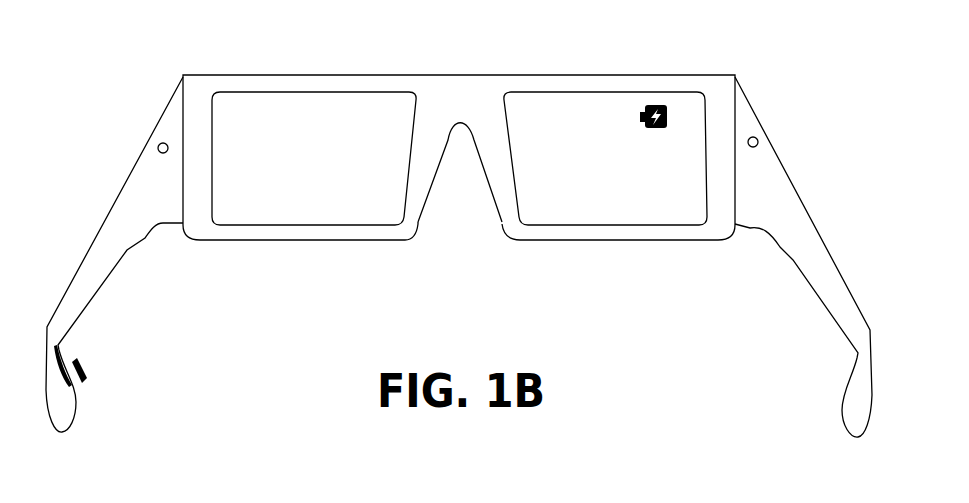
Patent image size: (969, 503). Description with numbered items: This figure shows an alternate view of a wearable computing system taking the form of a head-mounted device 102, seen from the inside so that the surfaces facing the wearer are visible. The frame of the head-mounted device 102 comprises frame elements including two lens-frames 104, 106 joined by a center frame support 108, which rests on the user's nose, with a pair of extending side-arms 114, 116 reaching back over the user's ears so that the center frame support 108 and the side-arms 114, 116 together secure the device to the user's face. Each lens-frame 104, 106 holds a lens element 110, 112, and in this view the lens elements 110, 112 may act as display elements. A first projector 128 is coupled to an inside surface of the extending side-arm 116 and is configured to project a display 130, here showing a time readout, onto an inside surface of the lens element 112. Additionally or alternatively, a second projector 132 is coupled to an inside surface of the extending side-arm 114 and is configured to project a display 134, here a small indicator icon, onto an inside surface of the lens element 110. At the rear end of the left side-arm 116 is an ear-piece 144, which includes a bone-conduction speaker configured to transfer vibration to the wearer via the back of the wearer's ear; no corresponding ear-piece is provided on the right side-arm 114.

The head-mounted device 102 is at (231, 55).
The lens-frame 104 is at (695, 240).
The lens-frame 106 is at (235, 240).
The center frame support 108 is at (456, 75).
The lens element 110 is at (563, 215).
The lens element 112 is at (335, 220).
The extending side-arm 114 is at (793, 183).
The extending side-arm 116 is at (105, 218).
The first projector 128 is at (158, 146).
The display 130 is at (303, 120).
The second projector 132 is at (753, 137).
The display 134 is at (636, 128).
The ear-piece 144 is at (84, 350).